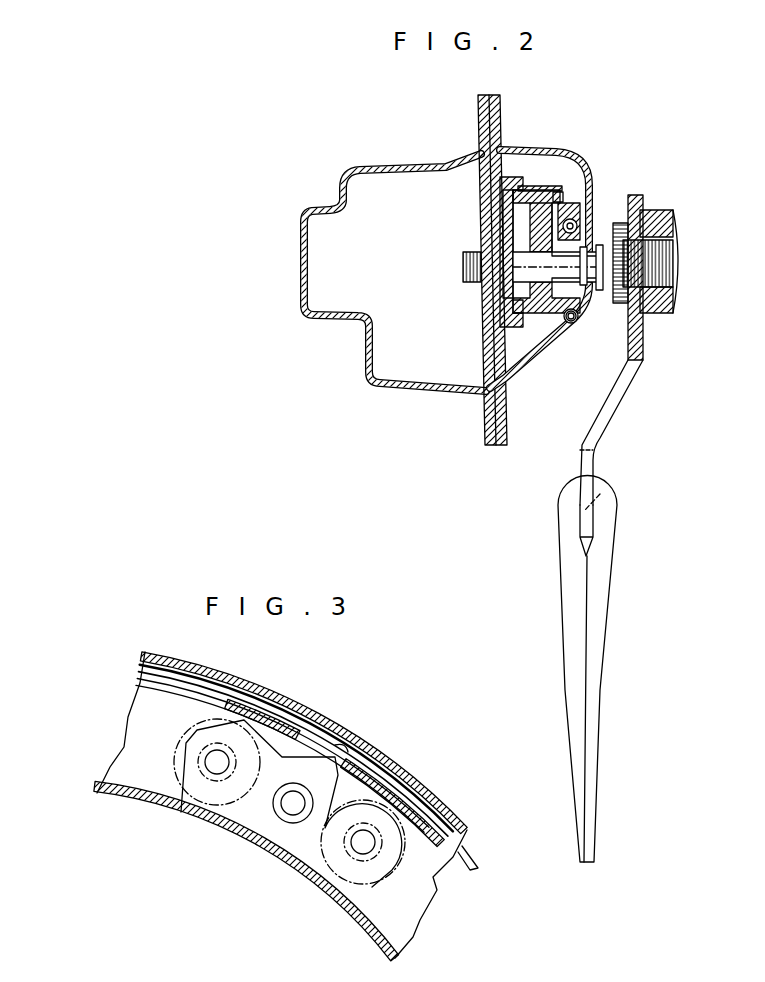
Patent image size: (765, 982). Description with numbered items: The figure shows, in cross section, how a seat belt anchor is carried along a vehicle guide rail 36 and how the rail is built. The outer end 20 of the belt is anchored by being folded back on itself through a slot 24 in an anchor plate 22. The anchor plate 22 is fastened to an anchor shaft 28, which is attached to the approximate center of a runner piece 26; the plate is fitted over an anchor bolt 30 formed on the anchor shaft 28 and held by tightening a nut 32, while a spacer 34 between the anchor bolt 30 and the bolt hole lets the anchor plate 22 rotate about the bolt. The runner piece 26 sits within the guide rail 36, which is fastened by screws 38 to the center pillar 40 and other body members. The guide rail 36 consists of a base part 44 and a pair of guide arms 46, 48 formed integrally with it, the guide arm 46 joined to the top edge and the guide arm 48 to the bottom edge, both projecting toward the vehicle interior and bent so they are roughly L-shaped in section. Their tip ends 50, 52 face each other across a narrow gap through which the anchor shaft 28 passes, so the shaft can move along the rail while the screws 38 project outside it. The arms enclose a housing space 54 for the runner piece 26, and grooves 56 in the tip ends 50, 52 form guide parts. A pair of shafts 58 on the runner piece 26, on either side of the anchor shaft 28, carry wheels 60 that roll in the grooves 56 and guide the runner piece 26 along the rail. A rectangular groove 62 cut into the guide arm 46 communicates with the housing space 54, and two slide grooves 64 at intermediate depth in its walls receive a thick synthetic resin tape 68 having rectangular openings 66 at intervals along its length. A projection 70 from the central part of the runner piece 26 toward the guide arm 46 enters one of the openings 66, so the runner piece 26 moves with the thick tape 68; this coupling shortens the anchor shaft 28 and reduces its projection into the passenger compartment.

In FIG. 2, the outer end 20 is at (617, 556).
In FIG. 2, the anchor plate 22 is at (598, 438).
In FIG. 2, the slot 24 is at (603, 493).
In FIG. 2, the runner piece 26 is at (500, 294).
In FIG. 3, the runner piece 26 is at (358, 786).
In FIG. 2, the anchor shaft 28 is at (612, 292).
In FIG. 2, the anchor bolt 30 is at (680, 258).
In FIG. 3, the anchor bolt 30 is at (290, 820).
In FIG. 2, the nut 32 is at (665, 314).
In FIG. 2, the spacer 34 is at (642, 214).
In FIG. 2, the guide rail 36 is at (546, 342).
In FIG. 3, the guide rail 36 is at (430, 782).
In FIG. 2, the screws 38 is at (462, 265).
In FIG. 2, the center pillar 40 is at (514, 394).
In FIG. 2, the base part 44 is at (492, 222).
In FIG. 3, the base part 44 is at (432, 875).
In FIG. 2, the guide arm 46 is at (545, 195).
In FIG. 3, the guide arm 46 is at (325, 724).
In FIG. 2, the guide arm 48 is at (512, 340).
In FIG. 3, the guide arm 48 is at (286, 875).
In FIG. 2, the tip end 50 is at (600, 240).
In FIG. 2, the tip end 52 is at (500, 328).
In FIG. 2, the housing space 54 is at (513, 210).
In FIG. 3, the housing space 54 is at (165, 739).
In FIG. 2, the grooves 56 is at (578, 232).
In FIG. 2, the shafts 58 is at (528, 247).
In FIG. 3, the shafts 58 is at (217, 764).
In FIG. 2, the wheels 60 is at (574, 323).
In FIG. 3, the wheels 60 is at (176, 756).
In FIG. 2, the rectangular groove 62 is at (530, 188).
In FIG. 3, the rectangular groove 62 is at (227, 688).
In FIG. 2, the slide grooves 64 is at (562, 188).
In FIG. 3, the slide grooves 64 is at (170, 693).
In FIG. 3, the rectangular openings 66 is at (342, 747).
In FIG. 3, the thick tape 68 is at (472, 862).
In FIG. 2, the projection 70 is at (556, 194).
In FIG. 3, the projection 70 is at (312, 730).